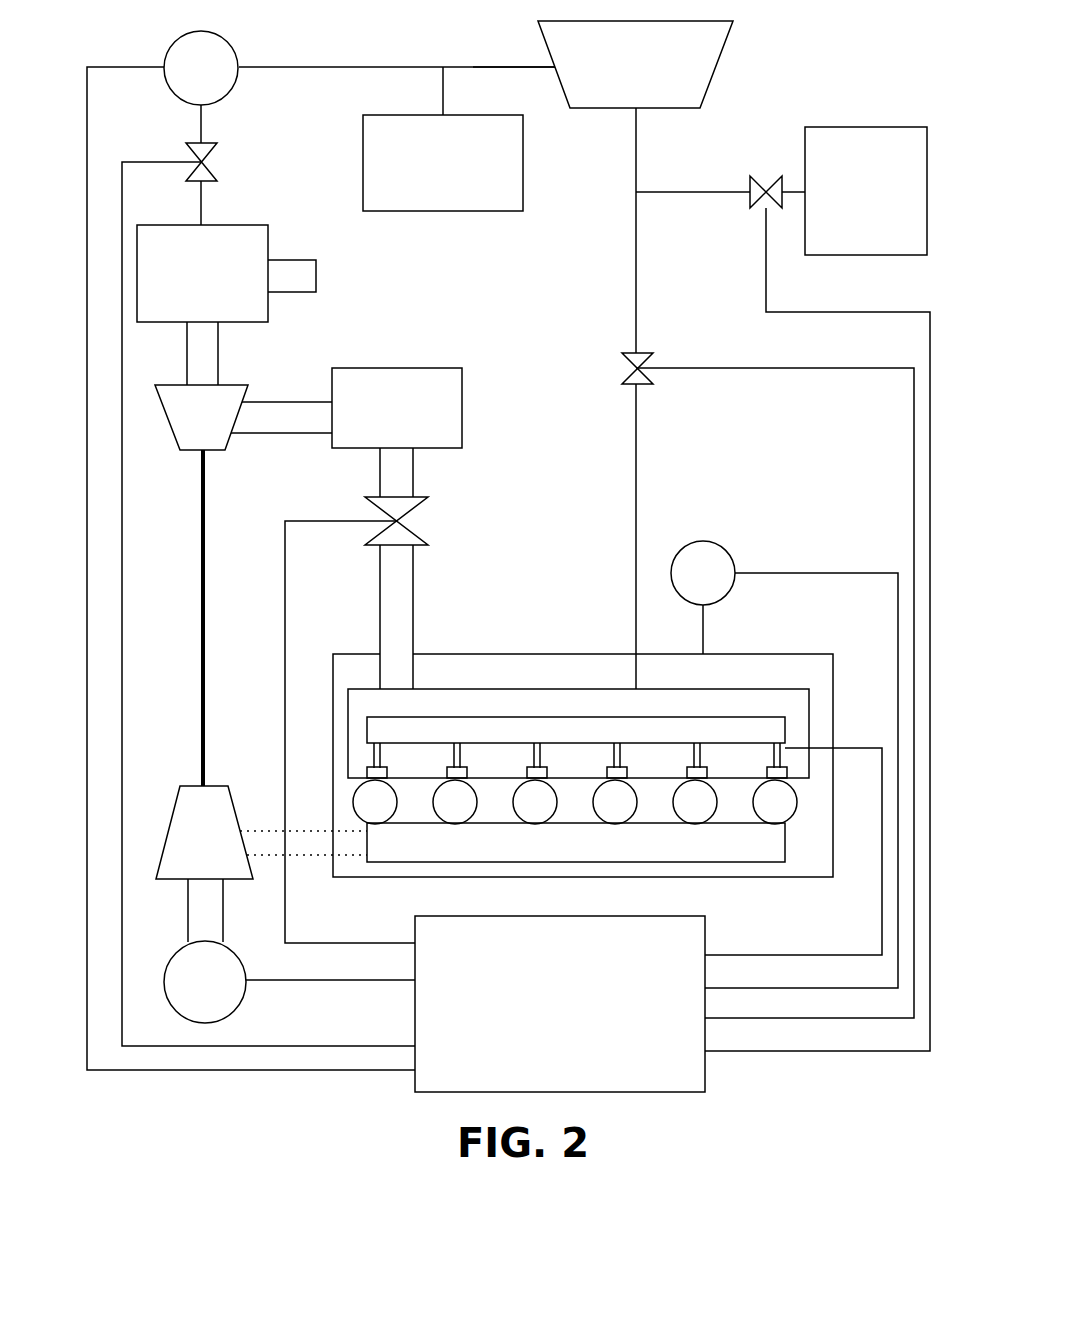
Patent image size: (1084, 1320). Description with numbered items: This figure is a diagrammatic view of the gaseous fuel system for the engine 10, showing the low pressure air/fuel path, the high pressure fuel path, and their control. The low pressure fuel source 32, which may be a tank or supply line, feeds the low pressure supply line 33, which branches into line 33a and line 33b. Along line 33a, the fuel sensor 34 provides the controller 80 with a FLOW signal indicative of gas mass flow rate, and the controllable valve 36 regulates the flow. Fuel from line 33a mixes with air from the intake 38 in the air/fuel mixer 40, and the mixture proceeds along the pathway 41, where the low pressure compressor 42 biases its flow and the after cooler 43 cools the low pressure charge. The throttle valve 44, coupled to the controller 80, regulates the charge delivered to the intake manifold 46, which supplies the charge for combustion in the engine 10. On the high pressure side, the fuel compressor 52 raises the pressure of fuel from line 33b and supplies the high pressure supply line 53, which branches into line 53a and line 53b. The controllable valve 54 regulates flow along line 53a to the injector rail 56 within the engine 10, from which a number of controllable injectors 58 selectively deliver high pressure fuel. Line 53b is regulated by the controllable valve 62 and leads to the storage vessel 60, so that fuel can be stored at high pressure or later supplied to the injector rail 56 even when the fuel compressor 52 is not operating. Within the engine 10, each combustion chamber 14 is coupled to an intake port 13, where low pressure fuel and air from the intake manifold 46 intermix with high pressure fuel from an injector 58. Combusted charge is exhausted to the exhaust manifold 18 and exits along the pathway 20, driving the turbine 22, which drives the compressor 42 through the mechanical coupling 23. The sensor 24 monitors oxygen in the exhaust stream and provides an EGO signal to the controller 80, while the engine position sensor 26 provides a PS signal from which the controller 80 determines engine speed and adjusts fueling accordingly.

The engine 10 is at (583, 765).
The intake port 13 is at (370, 770).
The combustion chamber 14 is at (575, 802).
The exhaust manifold 18 is at (576, 842).
The exhaust pathway 20 is at (300, 857).
The turbine 22 is at (204, 832).
The mechanical coupling 23 is at (205, 660).
The sensor 24 is at (230, 1013).
The engine position sensor 26 is at (703, 542).
The low pressure fuel source 32 is at (443, 163).
The low pressure supply line 33 is at (442, 87).
The line 33a is at (337, 70).
The line 33b is at (473, 68).
The fuel sensor 34 is at (170, 90).
The controllable valve 36 is at (215, 150).
The intake 38 is at (317, 273).
The air/fuel mixer 40 is at (202, 273).
The pathway 41 is at (219, 355).
The low pressure compressor 42 is at (243, 417).
The after cooler 43 is at (397, 432).
The throttle valve 44 is at (427, 545).
The intake manifold 46 is at (578, 733).
The fuel compressor 52 is at (635, 64).
The high pressure supply line 53 is at (637, 160).
The high pressure supply line 53a is at (636, 238).
The line 53b is at (692, 193).
The controllable valve 54 is at (622, 357).
The injector rail 56 is at (576, 730).
The controllable injectors 58 is at (381, 750).
The storage vessel 60 is at (866, 191).
The controllable valve 62 is at (748, 180).
The controller 80 is at (560, 1004).